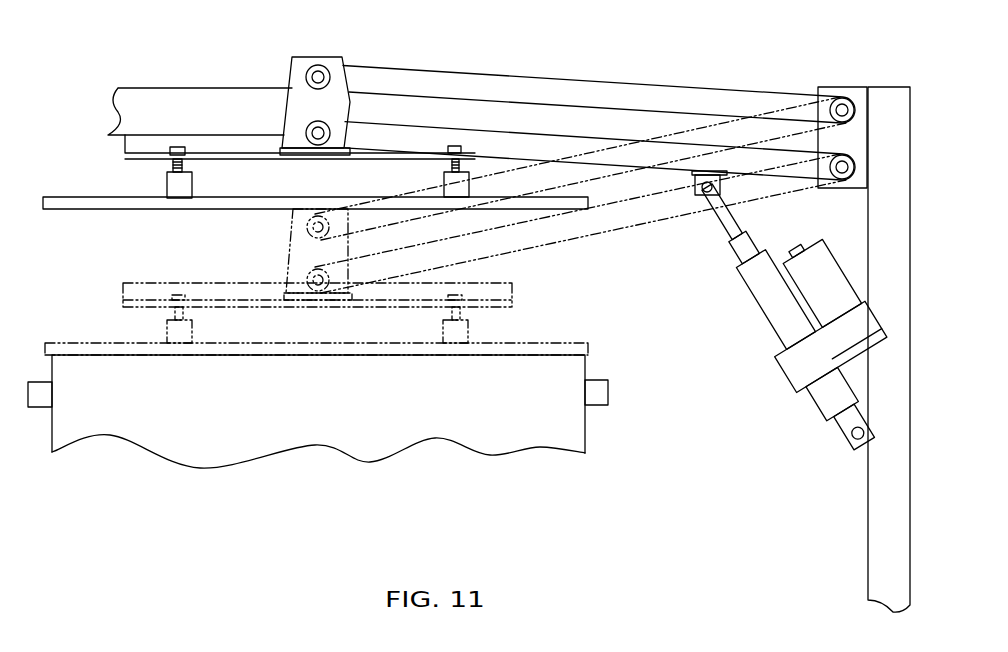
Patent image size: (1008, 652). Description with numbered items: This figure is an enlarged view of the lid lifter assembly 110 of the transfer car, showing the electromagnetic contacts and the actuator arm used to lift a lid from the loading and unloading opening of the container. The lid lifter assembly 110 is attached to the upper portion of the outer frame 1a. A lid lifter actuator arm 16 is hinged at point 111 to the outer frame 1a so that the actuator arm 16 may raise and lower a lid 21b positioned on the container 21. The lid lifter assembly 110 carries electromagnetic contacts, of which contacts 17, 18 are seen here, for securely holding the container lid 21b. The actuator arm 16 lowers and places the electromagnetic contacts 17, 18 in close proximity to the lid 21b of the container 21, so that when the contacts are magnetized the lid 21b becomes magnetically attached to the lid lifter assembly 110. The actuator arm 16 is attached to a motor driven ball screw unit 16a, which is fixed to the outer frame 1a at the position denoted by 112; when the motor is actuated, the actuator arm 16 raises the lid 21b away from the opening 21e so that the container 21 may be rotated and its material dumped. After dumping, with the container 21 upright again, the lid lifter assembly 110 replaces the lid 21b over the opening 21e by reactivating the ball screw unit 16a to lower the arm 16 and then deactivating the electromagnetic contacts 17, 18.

The outer frame 1a is at (199, 88).
The lid lifter actuator arm 16 is at (440, 71).
The motor driven ball screw unit 16a is at (818, 280).
The electromagnetic contact 17 is at (172, 186).
The electromagnetic contact 18 is at (452, 183).
The container 21 is at (305, 418).
The lid 21b is at (42, 200).
The opening 21e is at (228, 307).
The lid lifter assembly 110 is at (634, 62).
The hinge point 111 is at (843, 97).
The ball screw unit fixing position 112 is at (851, 435).